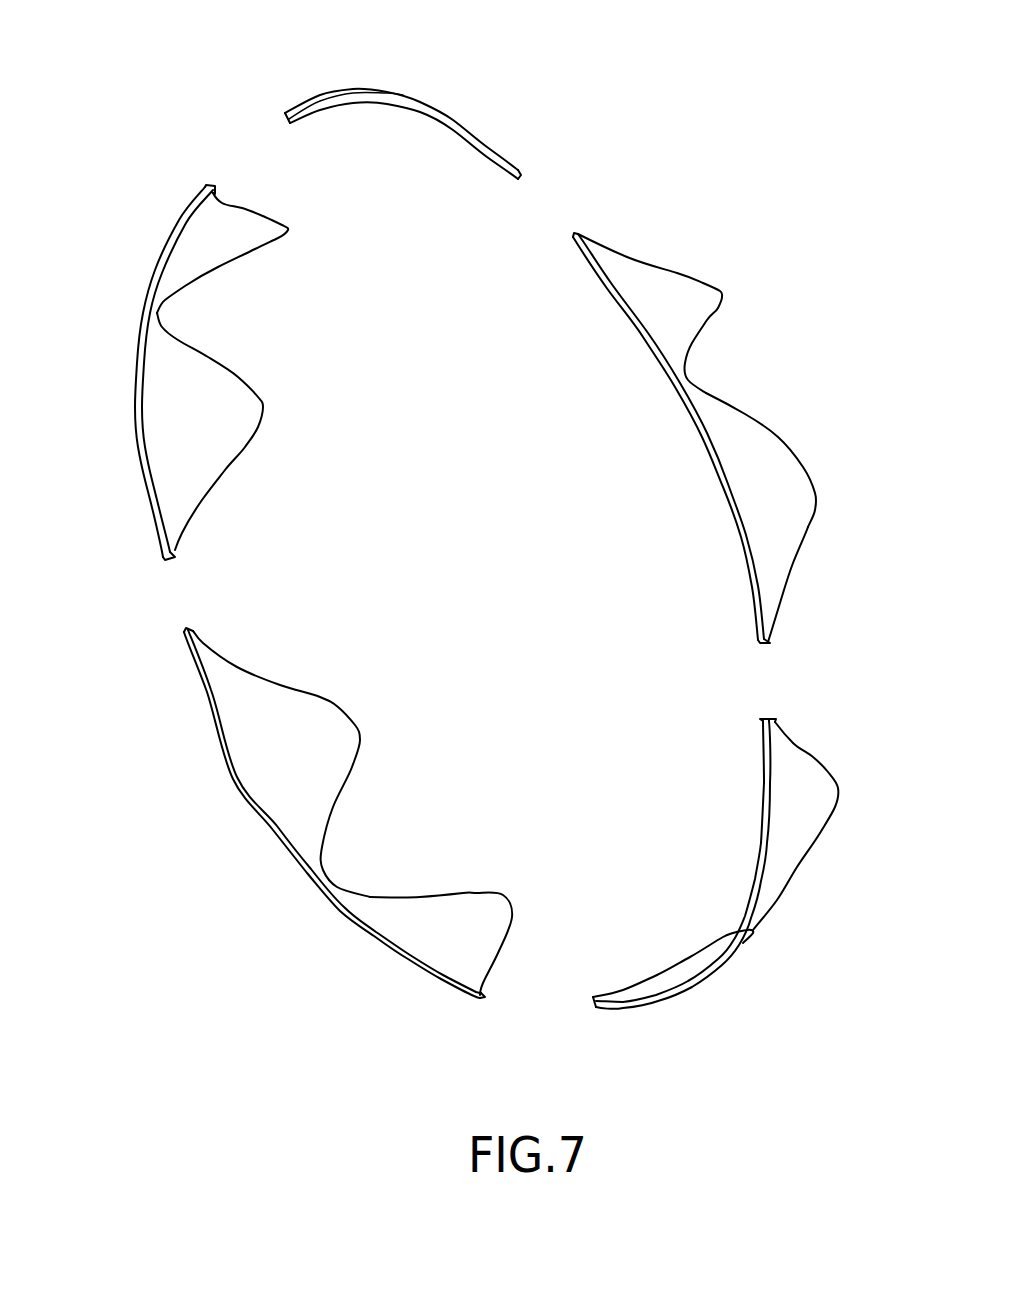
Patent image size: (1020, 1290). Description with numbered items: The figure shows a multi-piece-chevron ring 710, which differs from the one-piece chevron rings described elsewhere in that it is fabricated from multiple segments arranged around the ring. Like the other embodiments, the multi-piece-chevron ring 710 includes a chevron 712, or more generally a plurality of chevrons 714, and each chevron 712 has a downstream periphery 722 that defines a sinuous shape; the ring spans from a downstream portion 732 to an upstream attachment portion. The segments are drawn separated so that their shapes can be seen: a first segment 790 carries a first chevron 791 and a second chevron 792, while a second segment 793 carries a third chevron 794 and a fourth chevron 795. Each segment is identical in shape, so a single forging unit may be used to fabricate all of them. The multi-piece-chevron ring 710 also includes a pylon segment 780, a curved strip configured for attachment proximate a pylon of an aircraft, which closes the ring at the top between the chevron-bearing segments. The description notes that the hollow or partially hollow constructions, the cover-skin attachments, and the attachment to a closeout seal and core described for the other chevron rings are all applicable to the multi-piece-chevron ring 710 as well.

The multi-piece-chevron ring 710 is at (140, 112).
The pylon segment 780 is at (400, 98).
The second segment 793 is at (220, 372).
The third chevron 794 is at (272, 233).
The fourth chevron 795 is at (250, 410).
The chevron 712 is at (740, 577).
The downstream periphery 722 is at (707, 318).
The plurality of chevrons 714 is at (809, 532).
The downstream portion 732 is at (791, 583).
The first segment 790 is at (315, 790).
The first chevron 791 is at (338, 707).
The second chevron 792 is at (470, 902).